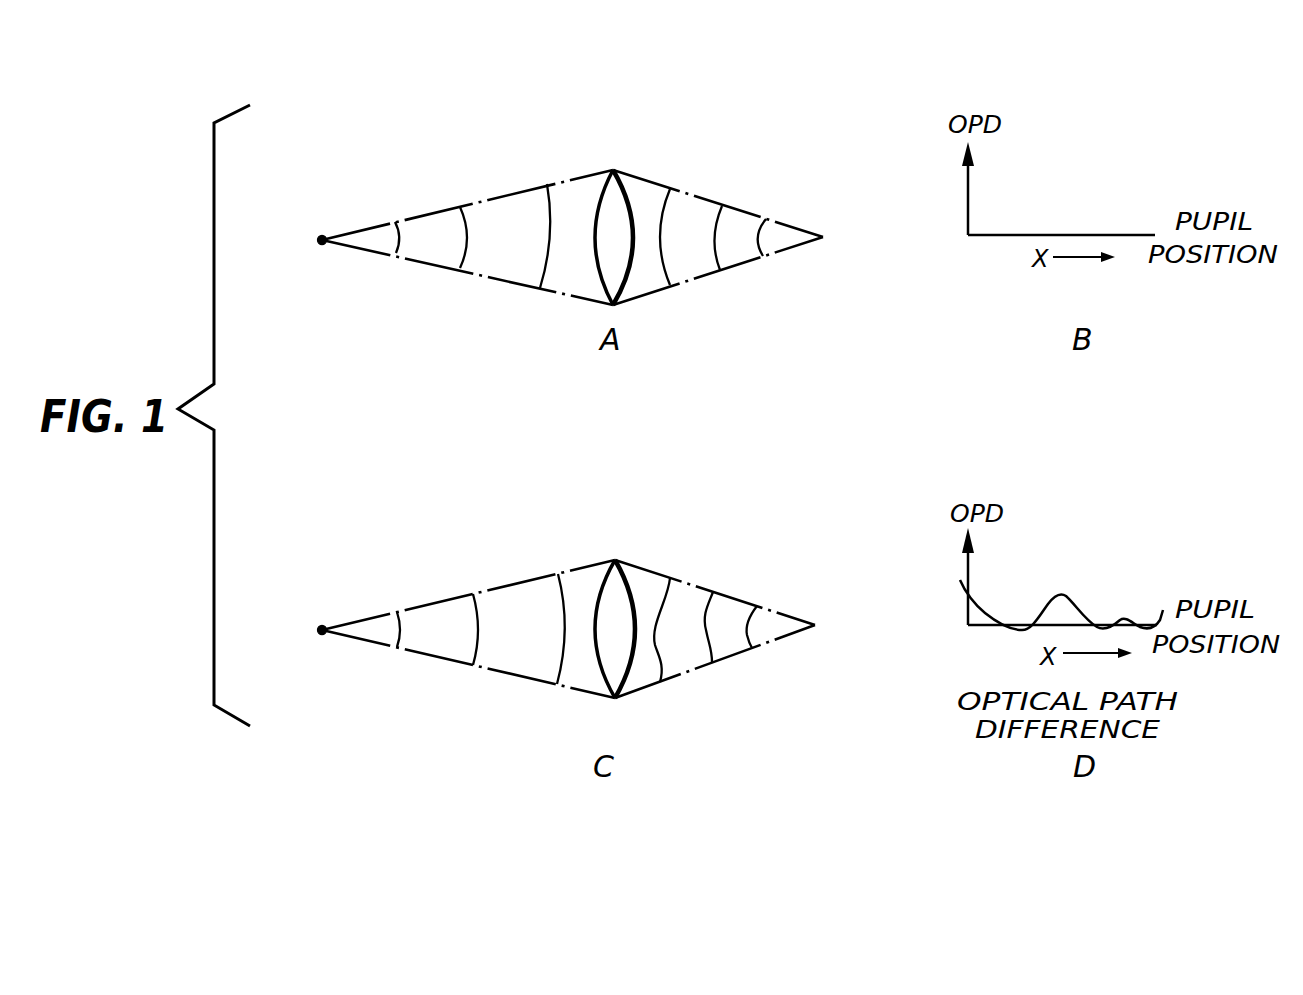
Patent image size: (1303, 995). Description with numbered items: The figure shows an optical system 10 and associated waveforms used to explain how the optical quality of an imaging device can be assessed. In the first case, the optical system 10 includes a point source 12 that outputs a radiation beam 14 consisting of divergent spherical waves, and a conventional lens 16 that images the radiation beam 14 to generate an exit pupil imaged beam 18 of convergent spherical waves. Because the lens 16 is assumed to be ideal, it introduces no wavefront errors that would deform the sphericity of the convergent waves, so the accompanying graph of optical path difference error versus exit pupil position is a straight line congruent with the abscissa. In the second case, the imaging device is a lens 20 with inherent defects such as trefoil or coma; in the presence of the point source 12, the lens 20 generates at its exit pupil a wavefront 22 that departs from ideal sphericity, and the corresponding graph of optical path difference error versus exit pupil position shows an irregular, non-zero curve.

In FIG. 1A, the optical system 10 is at (540, 160).
In FIG. 1C, the optical system 10 is at (580, 545).
In FIG. 1A, the point source 12 is at (322, 238).
In FIG. 1C, the point source 12 is at (322, 630).
In FIG. 1A, the radiation beam 14 is at (548, 230).
In FIG. 1C, the radiation beam 14 is at (558, 603).
In FIG. 1A, the lens 16 is at (608, 192).
In FIG. 1A, the exit pupil imaged beam 18 is at (723, 224).
In FIG. 1C, the lens 20 is at (615, 583).
In FIG. 1C, the wavefront 22 is at (717, 618).